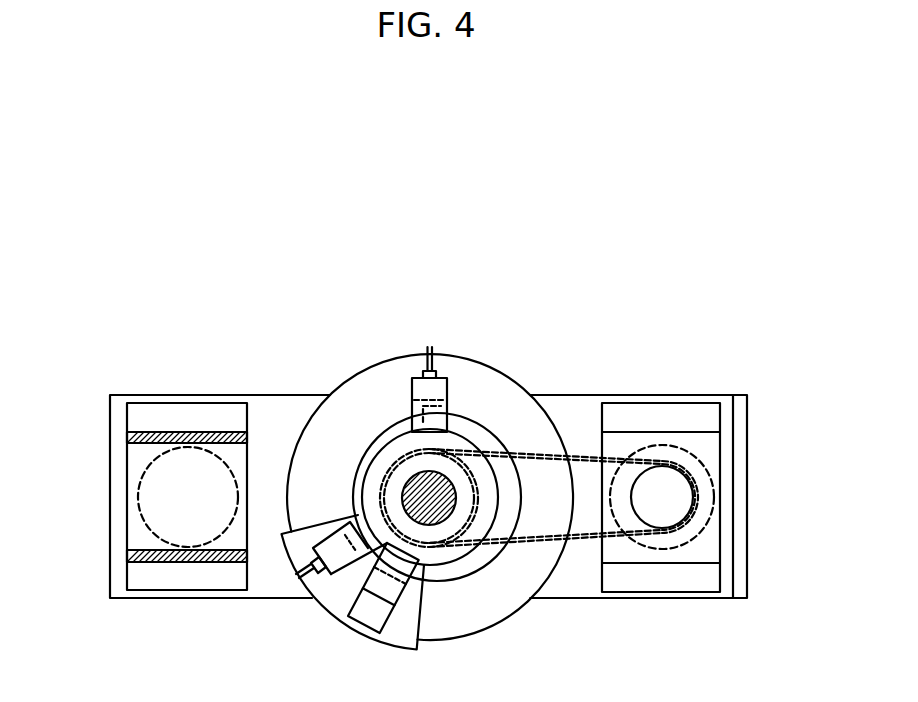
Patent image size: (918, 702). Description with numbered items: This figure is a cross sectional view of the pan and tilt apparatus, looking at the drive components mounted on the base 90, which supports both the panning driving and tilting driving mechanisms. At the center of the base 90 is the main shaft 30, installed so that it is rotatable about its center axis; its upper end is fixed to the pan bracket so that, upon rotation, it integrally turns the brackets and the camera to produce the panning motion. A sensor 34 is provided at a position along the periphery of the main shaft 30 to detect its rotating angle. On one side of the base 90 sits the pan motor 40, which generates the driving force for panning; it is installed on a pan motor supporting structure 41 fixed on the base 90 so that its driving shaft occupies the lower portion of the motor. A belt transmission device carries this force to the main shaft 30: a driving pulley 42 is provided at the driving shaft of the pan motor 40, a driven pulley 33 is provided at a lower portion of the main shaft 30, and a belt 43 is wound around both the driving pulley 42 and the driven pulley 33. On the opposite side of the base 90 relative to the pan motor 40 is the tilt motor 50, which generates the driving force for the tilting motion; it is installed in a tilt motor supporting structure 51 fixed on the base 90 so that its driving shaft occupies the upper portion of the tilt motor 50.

The main shaft 30 is at (415, 488).
The driven pulley 33 is at (467, 490).
The sensor 34 is at (342, 574).
The pan motor 40 is at (700, 532).
The pan motor supporting structure 41 is at (692, 413).
The driving pulley 42 is at (674, 493).
The belt 43 is at (580, 457).
The tilt motor 50 is at (143, 496).
The tilt motor supporting structure 51 is at (158, 434).
The base 90 is at (573, 583).